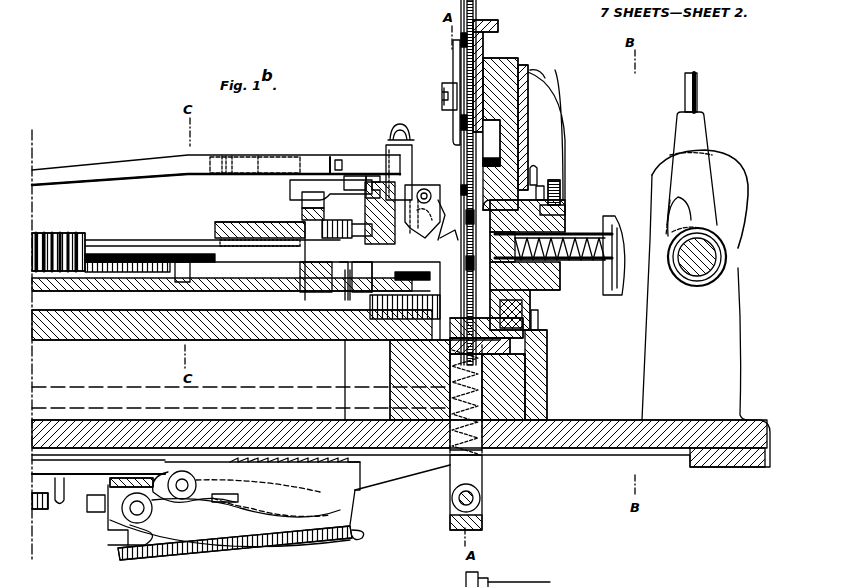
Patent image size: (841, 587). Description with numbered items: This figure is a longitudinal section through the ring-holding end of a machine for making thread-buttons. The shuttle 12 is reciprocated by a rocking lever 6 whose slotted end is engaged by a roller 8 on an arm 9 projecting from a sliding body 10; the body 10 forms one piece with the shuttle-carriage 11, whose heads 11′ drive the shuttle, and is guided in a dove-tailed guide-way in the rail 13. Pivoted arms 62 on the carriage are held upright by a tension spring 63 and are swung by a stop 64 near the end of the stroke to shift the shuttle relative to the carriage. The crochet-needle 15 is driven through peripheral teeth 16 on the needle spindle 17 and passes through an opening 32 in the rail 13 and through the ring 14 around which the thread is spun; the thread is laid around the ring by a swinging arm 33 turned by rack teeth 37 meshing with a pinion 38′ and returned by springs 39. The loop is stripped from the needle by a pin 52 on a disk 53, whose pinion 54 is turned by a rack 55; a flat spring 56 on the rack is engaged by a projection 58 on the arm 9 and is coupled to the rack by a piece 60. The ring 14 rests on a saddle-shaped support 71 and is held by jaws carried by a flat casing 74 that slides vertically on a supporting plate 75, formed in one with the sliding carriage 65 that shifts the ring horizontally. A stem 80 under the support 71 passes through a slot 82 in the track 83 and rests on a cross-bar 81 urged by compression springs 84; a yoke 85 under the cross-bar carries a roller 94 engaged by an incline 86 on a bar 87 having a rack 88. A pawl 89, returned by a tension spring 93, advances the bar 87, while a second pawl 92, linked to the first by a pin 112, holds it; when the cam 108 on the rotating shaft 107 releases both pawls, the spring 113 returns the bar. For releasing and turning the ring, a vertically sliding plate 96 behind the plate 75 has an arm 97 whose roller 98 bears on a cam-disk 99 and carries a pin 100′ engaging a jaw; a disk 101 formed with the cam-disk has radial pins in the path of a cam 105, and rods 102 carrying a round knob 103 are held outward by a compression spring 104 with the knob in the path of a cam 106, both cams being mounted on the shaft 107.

The rocking lever 6 is at (60, 178).
The roller 8 is at (342, 162).
The arm 9 is at (332, 157).
The sliding body 10 is at (375, 184).
The shuttle-carriage 11 is at (432, 185).
The heads 11′ is at (420, 185).
The shuttle 12 is at (441, 218).
The guide rail 13 is at (352, 176).
The ring 14 is at (466, 188).
The crochet-needle 15 is at (364, 262).
The peripheral teeth 16 is at (75, 234).
The needle spindle 17 is at (135, 244).
The opening 32 is at (405, 318).
The swinging arm 33 is at (454, 238).
The teeth 37 is at (395, 370).
The toothed pinion 38′ is at (340, 395).
The springs 39 is at (160, 248).
The pin 52 is at (349, 278).
The disk 53 is at (376, 262).
The pinion 54 is at (340, 224).
The rack 55 is at (305, 212).
The flat spring 56 is at (290, 192).
The projection 58 is at (282, 158).
The piece 60 is at (282, 224).
The arm 62 is at (389, 146).
The tension spring 63 is at (404, 124).
The stop 64 is at (378, 176).
The sliding carriage 65 is at (540, 316).
The saddle-shaped support 71 is at (540, 318).
The flat casing 74 is at (480, 9).
The supporting plate 75 is at (505, 64).
The stem 80 is at (524, 325).
The cross-bar 81 is at (548, 378).
The slot 82 is at (526, 362).
The track 83 is at (512, 346).
The compression springs 84 is at (484, 460).
The yoke 85 is at (484, 510).
The incline 86 is at (400, 490).
The rack bar 87 is at (50, 446).
The rack 88 is at (265, 460).
The pawl 89 is at (215, 470).
The pawl 92 is at (165, 515).
The tension-spring 93 is at (38, 510).
The roller 94 is at (481, 498).
The vertically sliding plate 96 is at (531, 80).
The arm 97 is at (540, 172).
The roller 98 is at (561, 188).
The cam-disk 99 is at (566, 208).
The pin 100′ is at (505, 160).
The disk 101 is at (544, 190).
The rods 102 is at (576, 238).
The round knob 103 is at (614, 222).
The compression-spring 104 is at (570, 262).
The cam 105 is at (697, 97).
The cam 106 is at (712, 162).
The rotating shaft 107 is at (683, 265).
The cam 108 is at (668, 212).
The pin 112 is at (228, 504).
The spring 113 is at (275, 548).